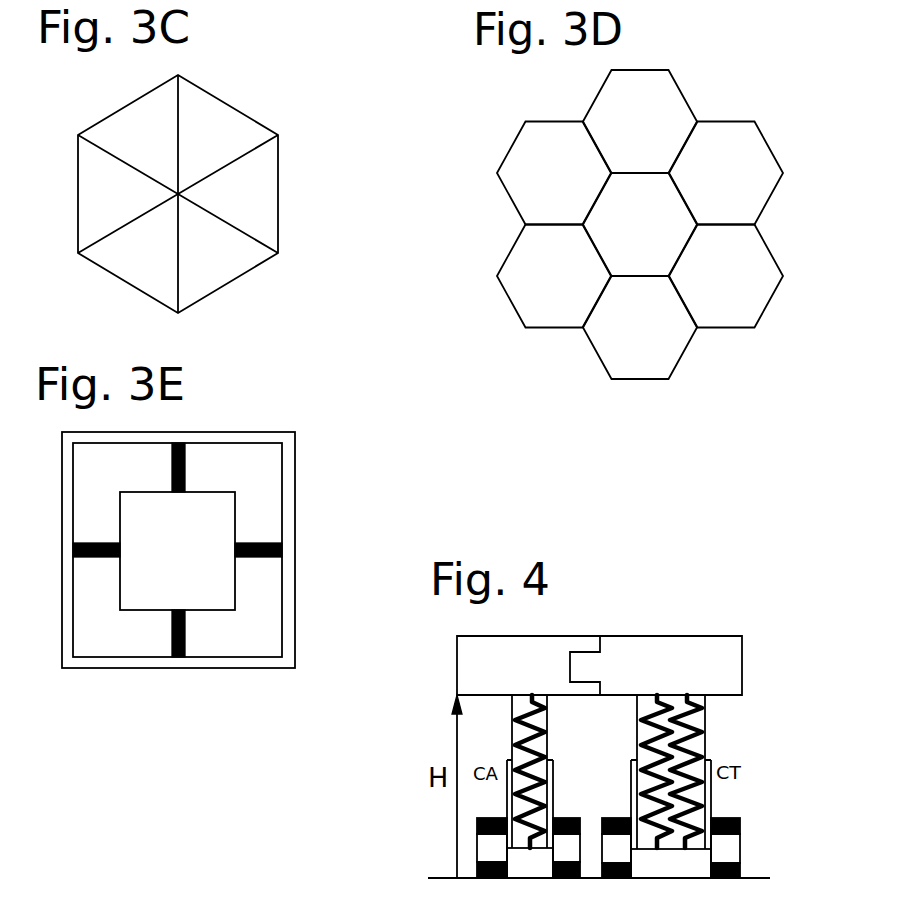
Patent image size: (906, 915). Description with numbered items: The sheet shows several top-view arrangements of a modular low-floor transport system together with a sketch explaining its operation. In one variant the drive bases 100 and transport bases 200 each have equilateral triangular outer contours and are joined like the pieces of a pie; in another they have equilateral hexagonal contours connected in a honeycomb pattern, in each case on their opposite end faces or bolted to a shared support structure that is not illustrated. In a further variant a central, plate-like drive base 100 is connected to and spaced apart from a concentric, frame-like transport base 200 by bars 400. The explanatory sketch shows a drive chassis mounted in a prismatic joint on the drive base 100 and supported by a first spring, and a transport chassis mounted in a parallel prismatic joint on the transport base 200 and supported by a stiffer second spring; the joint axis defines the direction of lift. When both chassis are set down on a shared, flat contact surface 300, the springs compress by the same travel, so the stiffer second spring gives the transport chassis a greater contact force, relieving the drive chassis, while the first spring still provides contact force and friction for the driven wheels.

In FIG. 3C, the drive base 100 is at (167, 148).
In FIG. 3D, the drive base 100 is at (576, 185).
In FIG. 3E, the drive base 100 is at (200, 563).
In FIG. 4, the drive base 100 is at (553, 678).
In FIG. 3C, the transport base 200 is at (237, 148).
In FIG. 3D, the transport base 200 is at (662, 134).
In FIG. 3E, the transport base 200 is at (296, 431).
In FIG. 4, the transport base 200 is at (693, 678).
In FIG. 4, the contact surface 300 is at (428, 878).
In FIG. 3E, the bar 400 is at (186, 478).